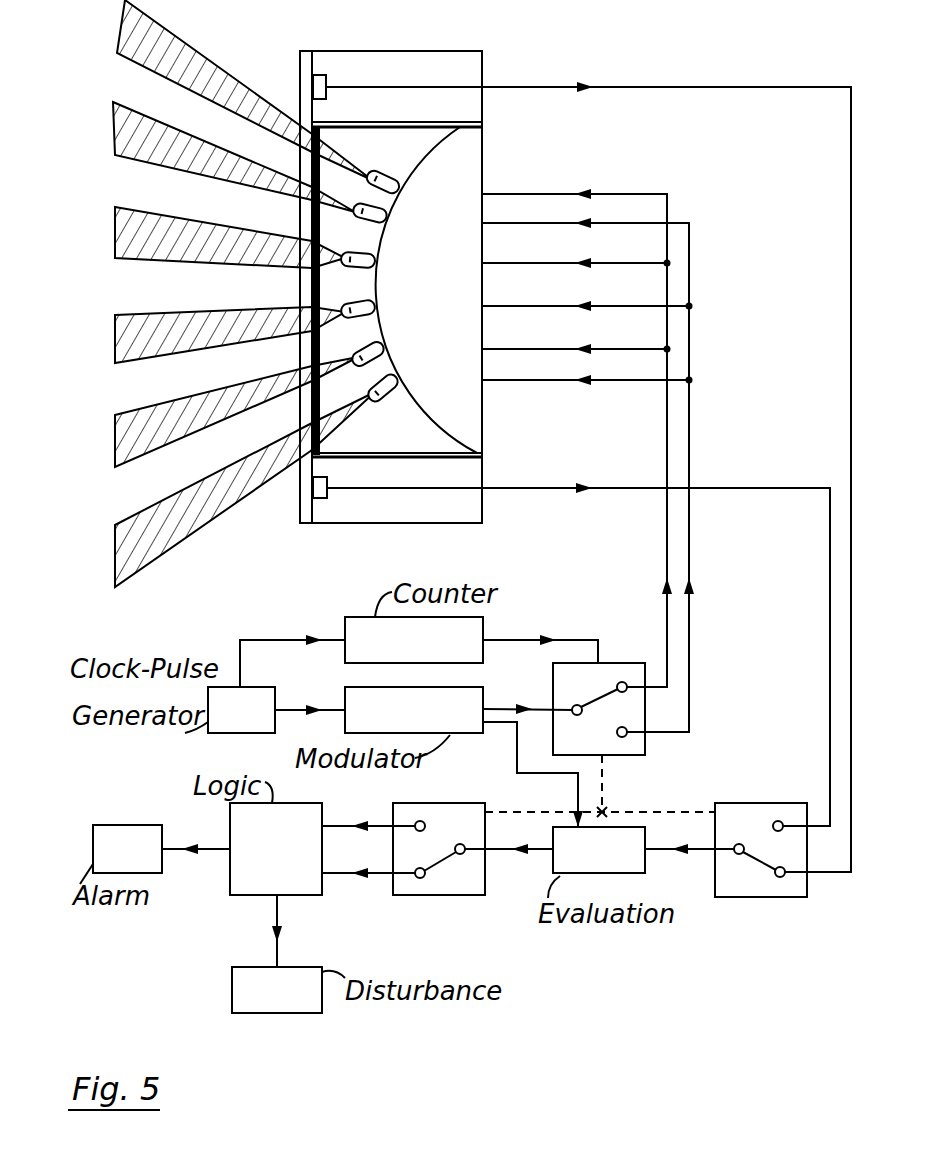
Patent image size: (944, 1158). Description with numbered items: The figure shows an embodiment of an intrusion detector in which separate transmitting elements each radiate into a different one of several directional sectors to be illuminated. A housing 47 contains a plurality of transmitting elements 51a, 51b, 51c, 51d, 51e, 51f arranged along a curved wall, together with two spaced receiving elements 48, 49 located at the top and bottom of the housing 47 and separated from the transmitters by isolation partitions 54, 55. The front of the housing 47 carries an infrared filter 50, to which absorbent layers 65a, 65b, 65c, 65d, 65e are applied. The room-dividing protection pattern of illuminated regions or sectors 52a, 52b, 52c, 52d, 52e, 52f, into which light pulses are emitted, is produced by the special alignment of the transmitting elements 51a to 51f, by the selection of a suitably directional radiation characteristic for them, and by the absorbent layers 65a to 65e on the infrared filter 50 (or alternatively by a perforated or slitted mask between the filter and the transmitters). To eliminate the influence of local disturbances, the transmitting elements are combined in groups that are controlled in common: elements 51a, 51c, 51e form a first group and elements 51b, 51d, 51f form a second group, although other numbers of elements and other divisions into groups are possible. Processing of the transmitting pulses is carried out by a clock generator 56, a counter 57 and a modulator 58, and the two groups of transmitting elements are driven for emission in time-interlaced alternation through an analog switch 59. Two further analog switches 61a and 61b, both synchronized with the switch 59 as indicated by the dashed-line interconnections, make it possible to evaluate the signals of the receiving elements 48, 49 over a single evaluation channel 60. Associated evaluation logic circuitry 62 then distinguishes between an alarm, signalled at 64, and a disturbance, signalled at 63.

The housing 47 is at (483, 63).
The receiving element 48 is at (322, 75).
The receiving element 49 is at (323, 500).
The infrared filter 50 is at (305, 508).
The transmitting element 51a is at (400, 187).
The transmitting element 51b is at (386, 215).
The transmitting element 51c is at (370, 262).
The transmitting element 51d is at (365, 307).
The transmitting element 51e is at (382, 350).
The transmitting element 51f is at (385, 380).
The illuminated sector 52a is at (222, 90).
The illuminated sector 52b is at (213, 157).
The illuminated sector 52c is at (208, 237).
The illuminated sector 52d is at (208, 335).
The illuminated sector 52e is at (215, 412).
The illuminated sector 52f is at (223, 489).
The isolation partition 54 is at (483, 122).
The isolation partition 55 is at (483, 452).
The clock generator 56 is at (259, 728).
The counter 57 is at (431, 658).
The modulator 58 is at (431, 728).
The analog switch 59 is at (650, 648).
The evaluation channel 60 is at (616, 868).
The analog switch 61a is at (735, 803).
The analog switch 61b is at (418, 803).
The evaluation logic circuitry 62 is at (293, 866).
The disturbance output 63 is at (294, 1008).
The alarm output 64 is at (145, 868).
The absorbent layer 65a is at (312, 172).
The absorbent layer 65b is at (312, 230).
The absorbent layer 65c is at (312, 285).
The absorbent layer 65d is at (312, 347).
The absorbent layer 65e is at (312, 407).